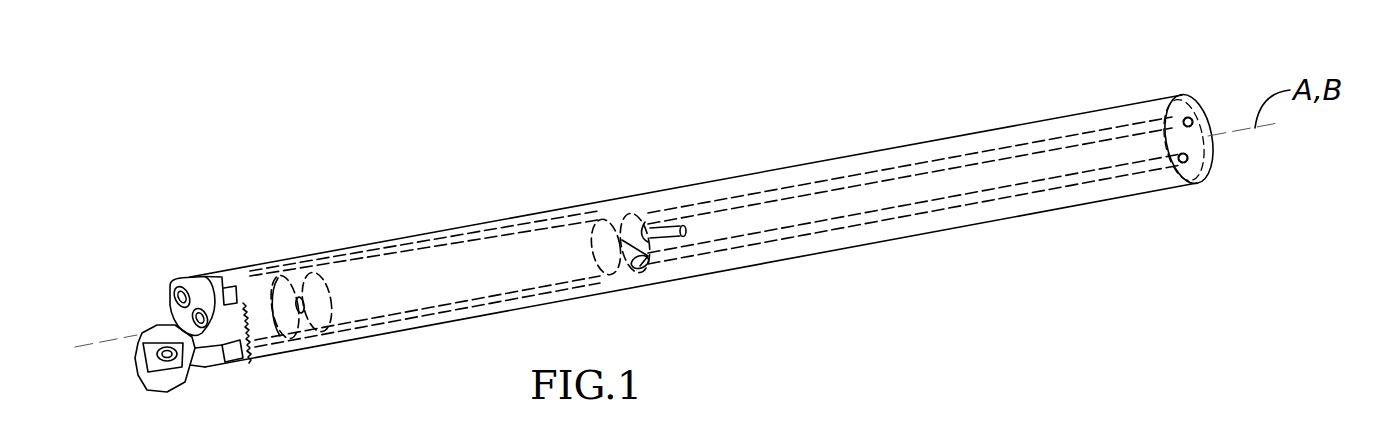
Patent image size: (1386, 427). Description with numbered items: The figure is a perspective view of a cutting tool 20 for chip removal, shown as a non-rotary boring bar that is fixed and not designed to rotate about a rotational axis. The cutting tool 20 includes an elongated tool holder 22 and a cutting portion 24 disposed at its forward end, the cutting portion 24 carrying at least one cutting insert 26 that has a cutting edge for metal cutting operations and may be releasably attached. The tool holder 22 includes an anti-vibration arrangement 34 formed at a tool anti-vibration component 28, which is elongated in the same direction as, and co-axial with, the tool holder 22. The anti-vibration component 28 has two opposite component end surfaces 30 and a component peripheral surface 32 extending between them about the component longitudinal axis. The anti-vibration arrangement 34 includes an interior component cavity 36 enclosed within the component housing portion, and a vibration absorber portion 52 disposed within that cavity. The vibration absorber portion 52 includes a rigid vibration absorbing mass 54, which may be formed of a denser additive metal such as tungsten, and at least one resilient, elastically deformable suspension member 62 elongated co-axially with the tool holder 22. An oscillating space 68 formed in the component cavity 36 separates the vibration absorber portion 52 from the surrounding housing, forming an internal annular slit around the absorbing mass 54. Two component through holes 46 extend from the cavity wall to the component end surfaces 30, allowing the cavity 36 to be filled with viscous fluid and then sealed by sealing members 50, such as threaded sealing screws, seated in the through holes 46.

The cutting tool 20 is at (1170, 69).
The tool holder 22 is at (1082, 253).
The cutting portion 24 is at (184, 249).
The cutting insert 26 is at (194, 379).
The tool anti-vibration component 28 is at (829, 129).
The component end surfaces 30 is at (1203, 143).
The component peripheral surface 32 is at (943, 145).
The anti-vibration arrangement 34 is at (442, 216).
The interior component cavity 36 is at (617, 218).
The component through hole 46 is at (1033, 132).
The sealing member 50 is at (1197, 120).
The vibration absorber portion 52 is at (548, 247).
The vibration absorbing mass 54 is at (408, 278).
The resilient suspension member 62 is at (660, 225).
The oscillating space 68 is at (362, 258).